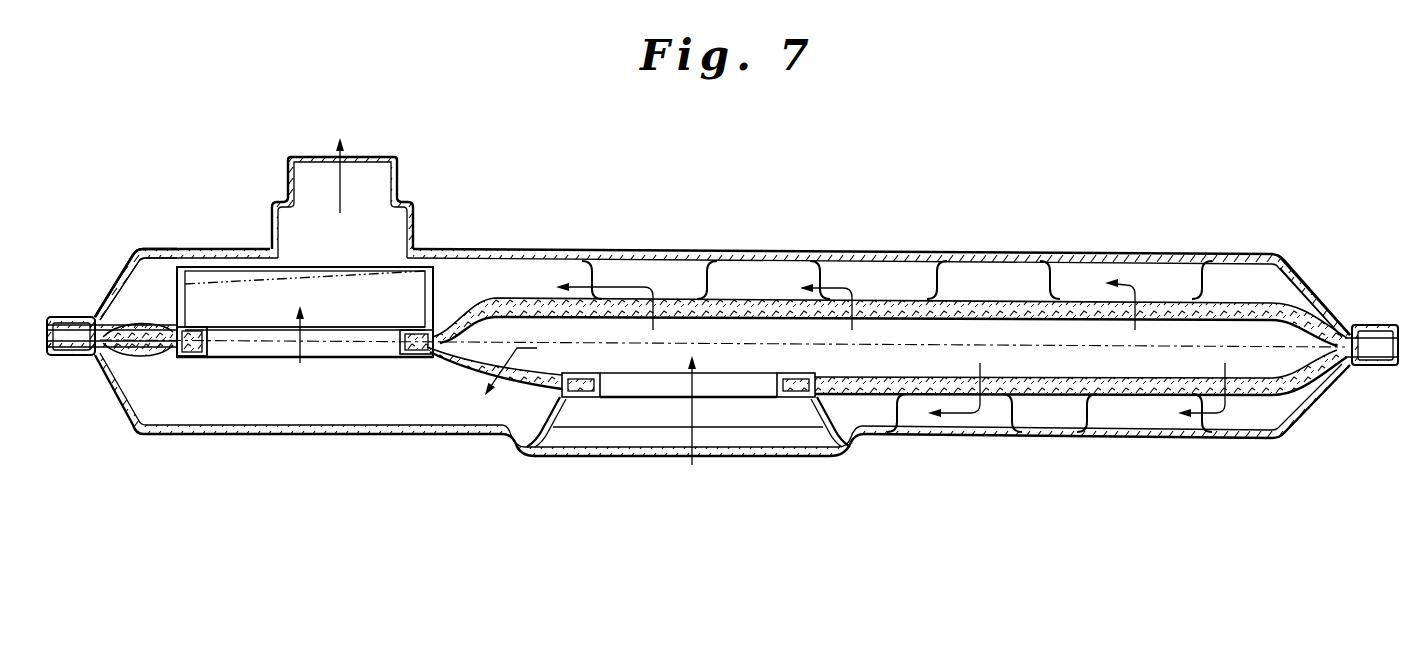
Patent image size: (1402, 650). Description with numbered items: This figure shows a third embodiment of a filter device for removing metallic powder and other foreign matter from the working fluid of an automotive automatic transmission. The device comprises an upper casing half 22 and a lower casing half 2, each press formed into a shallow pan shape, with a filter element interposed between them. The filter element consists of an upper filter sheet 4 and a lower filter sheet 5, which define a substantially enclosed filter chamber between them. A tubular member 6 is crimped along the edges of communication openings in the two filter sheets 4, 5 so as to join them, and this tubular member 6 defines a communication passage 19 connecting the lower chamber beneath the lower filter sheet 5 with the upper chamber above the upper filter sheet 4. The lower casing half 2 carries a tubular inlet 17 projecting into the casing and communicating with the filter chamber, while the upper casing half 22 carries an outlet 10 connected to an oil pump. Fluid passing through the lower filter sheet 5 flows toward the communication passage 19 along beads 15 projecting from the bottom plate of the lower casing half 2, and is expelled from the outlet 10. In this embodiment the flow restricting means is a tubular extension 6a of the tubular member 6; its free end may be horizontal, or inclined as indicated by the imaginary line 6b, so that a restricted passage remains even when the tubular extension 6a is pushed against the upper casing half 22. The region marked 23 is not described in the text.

The lower casing half 2 is at (1240, 440).
The upper filter sheet 4 is at (982, 300).
The lower filter sheet 5 is at (1057, 393).
The tubular member 6 is at (263, 357).
The tubular extension 6a is at (175, 297).
The imaginary line 6b is at (240, 282).
The outlet 10 is at (287, 169).
The beads 15 is at (1142, 413).
The tubular inlet 17 is at (818, 423).
The communication passage 19 is at (207, 343).
The upper casing half 22 is at (1223, 257).
The opening 23 is at (607, 343).